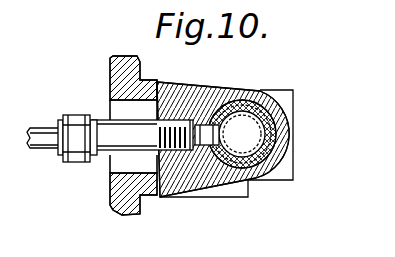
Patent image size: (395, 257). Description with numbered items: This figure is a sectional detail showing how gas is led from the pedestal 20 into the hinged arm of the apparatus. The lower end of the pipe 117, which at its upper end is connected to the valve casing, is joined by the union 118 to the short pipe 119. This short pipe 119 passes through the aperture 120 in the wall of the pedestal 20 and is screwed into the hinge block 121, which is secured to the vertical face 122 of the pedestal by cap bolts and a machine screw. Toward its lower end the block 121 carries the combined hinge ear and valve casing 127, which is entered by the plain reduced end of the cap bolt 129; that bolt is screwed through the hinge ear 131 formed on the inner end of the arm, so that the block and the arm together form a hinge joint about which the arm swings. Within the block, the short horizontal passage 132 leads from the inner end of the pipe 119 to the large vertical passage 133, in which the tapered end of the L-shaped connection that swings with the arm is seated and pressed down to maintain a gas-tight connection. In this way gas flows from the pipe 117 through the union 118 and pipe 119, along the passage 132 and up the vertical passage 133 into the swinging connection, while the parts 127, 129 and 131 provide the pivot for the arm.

The pedestal 20 is at (118, 201).
The pipe 117 is at (41, 128).
The union 118 is at (73, 113).
The short pipe 119 is at (118, 134).
The aperture 120 is at (117, 108).
The hinge block 121 is at (194, 84).
The vertical face 122 is at (153, 81).
The combined hinge ear and valve casing 127 is at (245, 91).
The cap bolt 129 is at (288, 91).
The hinge ear 131 is at (277, 174).
The short horizontal passage 132 is at (212, 168).
The large vertical passage 133 is at (243, 137).